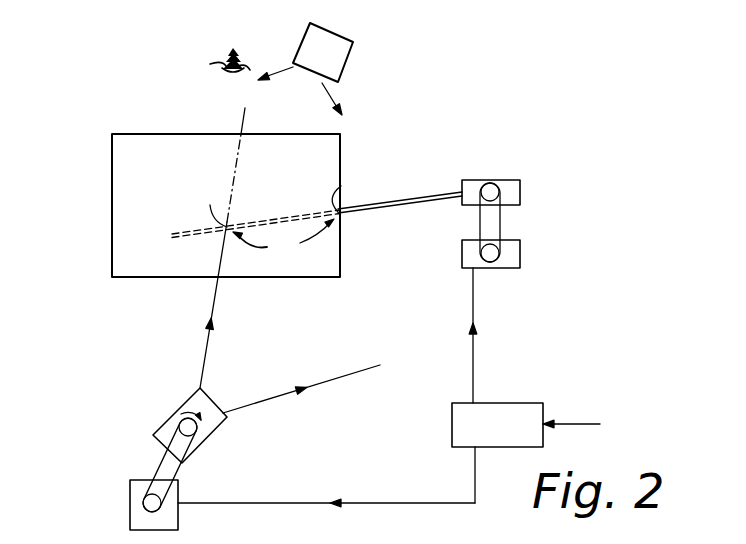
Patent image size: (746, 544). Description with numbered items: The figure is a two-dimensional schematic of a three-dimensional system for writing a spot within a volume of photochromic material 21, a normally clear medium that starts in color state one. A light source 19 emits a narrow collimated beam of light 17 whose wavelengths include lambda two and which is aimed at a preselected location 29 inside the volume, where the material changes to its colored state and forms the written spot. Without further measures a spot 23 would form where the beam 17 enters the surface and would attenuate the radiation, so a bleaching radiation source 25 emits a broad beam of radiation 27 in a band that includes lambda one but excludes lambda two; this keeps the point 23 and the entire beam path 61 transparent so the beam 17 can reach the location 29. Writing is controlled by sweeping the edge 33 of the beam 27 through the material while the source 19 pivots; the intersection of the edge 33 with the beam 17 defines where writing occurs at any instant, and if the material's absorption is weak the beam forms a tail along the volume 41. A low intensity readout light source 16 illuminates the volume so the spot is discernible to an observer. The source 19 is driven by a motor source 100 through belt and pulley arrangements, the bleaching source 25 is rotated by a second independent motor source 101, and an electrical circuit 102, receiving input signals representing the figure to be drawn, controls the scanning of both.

The readout light source 16 is at (338, 56).
The narrow collimated beam of light 17 is at (438, 193).
The light source 19 is at (507, 182).
The volume of photochromic material 21 is at (330, 252).
The spot 23 is at (358, 175).
The bleaching radiation source 25 is at (207, 436).
The broad beam of radiation 27 is at (257, 400).
The preselected location 29 is at (200, 205).
The edge of the radiation beam 33 is at (223, 243).
The volume 41 is at (180, 233).
The beam path 61 is at (283, 240).
The motor source 100 is at (513, 252).
The second independent motor source 101 is at (135, 497).
The electrical circuit 102 is at (510, 408).